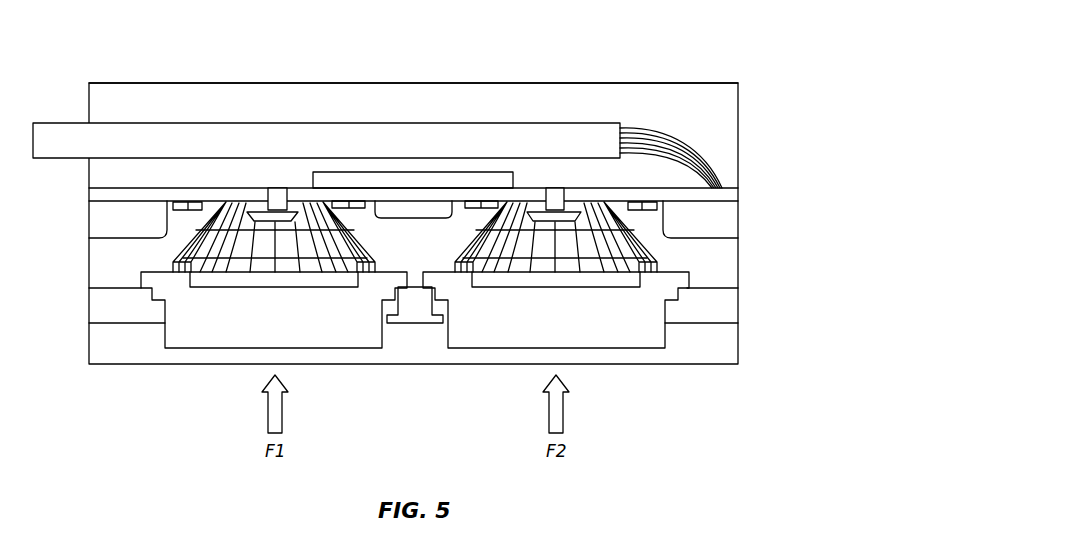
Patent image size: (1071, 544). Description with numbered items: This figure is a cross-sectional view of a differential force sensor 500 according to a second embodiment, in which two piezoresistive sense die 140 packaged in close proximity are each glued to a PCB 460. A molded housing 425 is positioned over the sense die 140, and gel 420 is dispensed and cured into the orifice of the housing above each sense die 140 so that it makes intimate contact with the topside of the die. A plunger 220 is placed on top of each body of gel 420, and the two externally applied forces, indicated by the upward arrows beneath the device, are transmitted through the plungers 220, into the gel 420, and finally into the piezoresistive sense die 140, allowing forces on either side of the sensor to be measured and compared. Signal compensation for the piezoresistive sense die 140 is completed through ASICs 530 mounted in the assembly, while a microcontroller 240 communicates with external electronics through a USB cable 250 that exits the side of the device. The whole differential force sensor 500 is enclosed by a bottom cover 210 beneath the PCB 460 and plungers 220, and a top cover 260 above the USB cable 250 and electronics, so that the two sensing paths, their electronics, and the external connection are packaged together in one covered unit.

The differential force sensor 500 is at (655, 45).
The top cover 260 is at (413, 98).
The USB cable 250 is at (377, 155).
The ASICs 530 is at (413, 181).
The microcontroller 240 is at (447, 180).
The piezoresistive sense die 140 is at (296, 186).
The PCB 460 is at (700, 219).
The molded housing 425 is at (413, 244).
The gel 420 is at (415, 237).
The bottom cover 210 is at (413, 305).
The plunger 220 is at (415, 310).